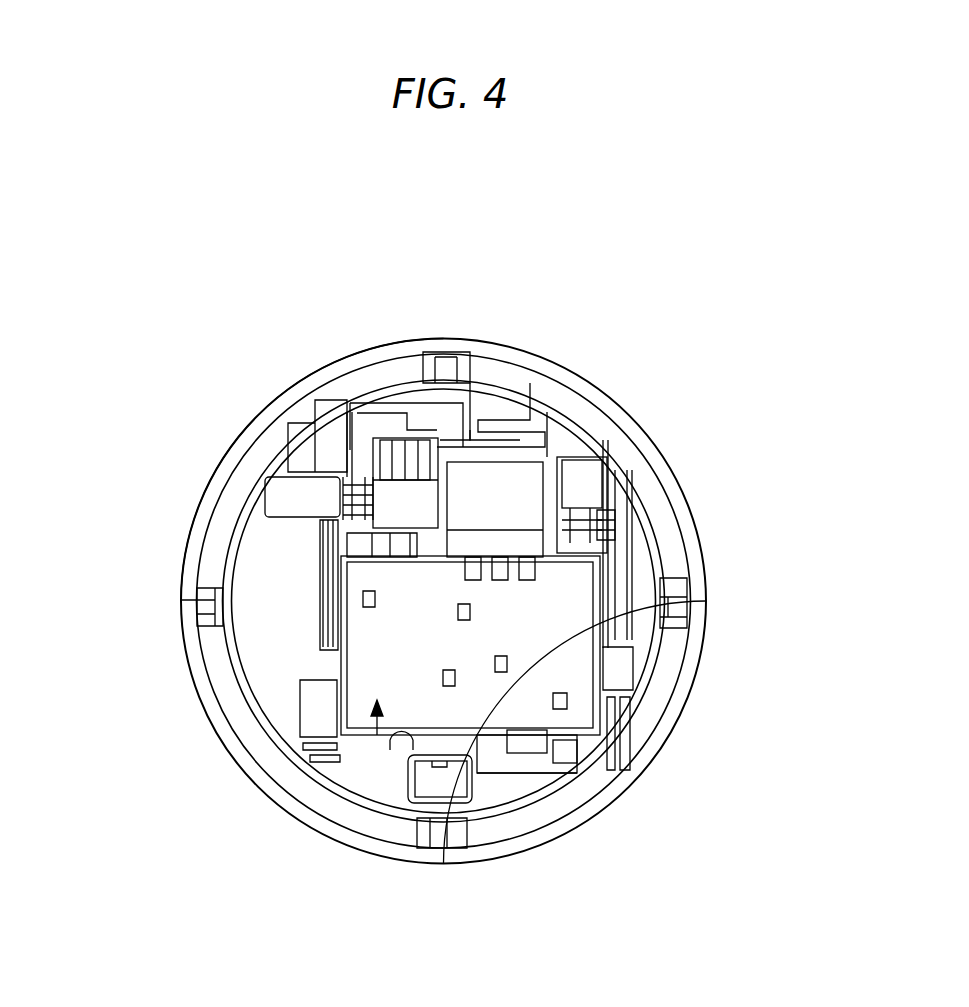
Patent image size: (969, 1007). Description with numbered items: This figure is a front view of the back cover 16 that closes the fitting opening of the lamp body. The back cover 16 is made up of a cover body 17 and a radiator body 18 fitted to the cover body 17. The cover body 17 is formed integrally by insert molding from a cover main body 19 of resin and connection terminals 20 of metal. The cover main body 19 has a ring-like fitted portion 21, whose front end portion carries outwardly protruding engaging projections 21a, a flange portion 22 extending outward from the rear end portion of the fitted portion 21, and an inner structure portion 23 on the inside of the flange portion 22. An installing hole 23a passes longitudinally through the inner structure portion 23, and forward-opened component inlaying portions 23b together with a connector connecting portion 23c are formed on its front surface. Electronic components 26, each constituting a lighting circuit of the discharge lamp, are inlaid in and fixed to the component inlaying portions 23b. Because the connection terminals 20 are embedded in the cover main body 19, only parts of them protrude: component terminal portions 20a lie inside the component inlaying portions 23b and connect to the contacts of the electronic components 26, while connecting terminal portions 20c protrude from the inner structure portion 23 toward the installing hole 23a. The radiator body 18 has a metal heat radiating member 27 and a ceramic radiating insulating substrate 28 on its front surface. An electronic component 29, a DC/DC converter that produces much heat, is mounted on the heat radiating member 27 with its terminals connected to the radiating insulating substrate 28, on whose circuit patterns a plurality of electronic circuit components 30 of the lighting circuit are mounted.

The back cover 16 is at (750, 305).
The cover body 17 is at (664, 473).
The radiator body 18 is at (378, 740).
The cover main body 19 is at (683, 495).
The connection terminals 20 is at (665, 535).
The component terminal portions 20a is at (290, 445).
The connecting terminal portions 20c is at (322, 620).
The fitted portion 21 is at (653, 688).
The engaging projections 21a is at (446, 362).
The flange portion 22 is at (662, 730).
The inner structure portion 23 is at (515, 790).
The installing hole 23a is at (405, 735).
The component inlaying portions 23b is at (283, 487).
The connector connecting portion 23c is at (512, 787).
The electronic components 26 is at (390, 445).
The heat radiating member 27 is at (333, 545).
The radiating insulating substrate 28 is at (358, 683).
The electronic component (DC/DC converter) 29 is at (552, 425).
The electronic circuit components 30 is at (363, 600).